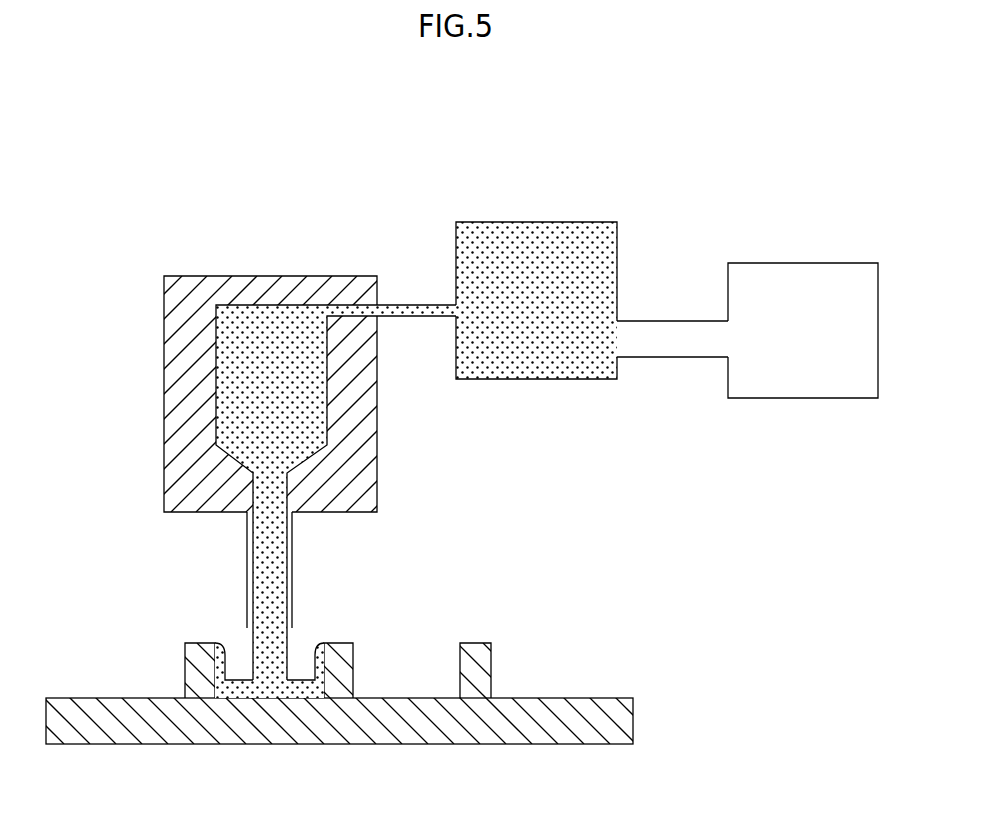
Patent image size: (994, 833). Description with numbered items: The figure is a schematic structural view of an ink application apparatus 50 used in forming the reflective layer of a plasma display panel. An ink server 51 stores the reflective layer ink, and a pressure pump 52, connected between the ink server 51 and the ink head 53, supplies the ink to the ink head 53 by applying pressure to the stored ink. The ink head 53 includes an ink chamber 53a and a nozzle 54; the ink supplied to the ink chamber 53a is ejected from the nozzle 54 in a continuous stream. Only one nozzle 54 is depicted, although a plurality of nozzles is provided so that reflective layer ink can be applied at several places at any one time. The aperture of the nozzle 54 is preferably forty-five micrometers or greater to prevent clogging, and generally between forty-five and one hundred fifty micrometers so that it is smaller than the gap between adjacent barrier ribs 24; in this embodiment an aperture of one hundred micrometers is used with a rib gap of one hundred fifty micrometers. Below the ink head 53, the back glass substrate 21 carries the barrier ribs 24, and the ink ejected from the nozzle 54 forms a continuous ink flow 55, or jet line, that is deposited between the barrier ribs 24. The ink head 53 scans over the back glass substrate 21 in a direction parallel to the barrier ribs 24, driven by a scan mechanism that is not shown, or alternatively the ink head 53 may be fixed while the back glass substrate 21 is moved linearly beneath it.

The back glass substrate 21 is at (597, 718).
The barrier ribs 24 is at (478, 660).
The ink application apparatus 50 is at (412, 247).
The ink server 51 is at (800, 398).
The pressure pump 52 is at (547, 380).
The ink head 53 is at (328, 513).
The ink chamber 53a is at (233, 385).
The nozzle 54 is at (250, 567).
The continuous ink flow 55 is at (287, 639).